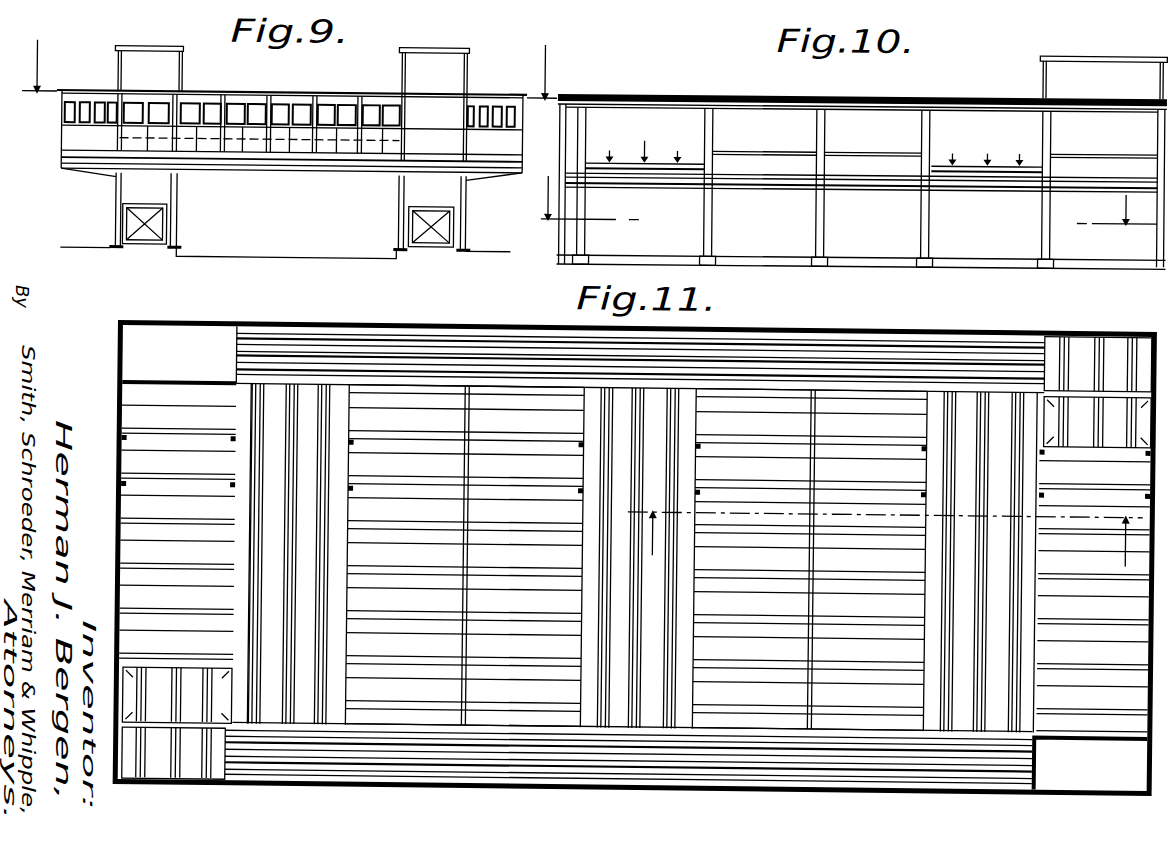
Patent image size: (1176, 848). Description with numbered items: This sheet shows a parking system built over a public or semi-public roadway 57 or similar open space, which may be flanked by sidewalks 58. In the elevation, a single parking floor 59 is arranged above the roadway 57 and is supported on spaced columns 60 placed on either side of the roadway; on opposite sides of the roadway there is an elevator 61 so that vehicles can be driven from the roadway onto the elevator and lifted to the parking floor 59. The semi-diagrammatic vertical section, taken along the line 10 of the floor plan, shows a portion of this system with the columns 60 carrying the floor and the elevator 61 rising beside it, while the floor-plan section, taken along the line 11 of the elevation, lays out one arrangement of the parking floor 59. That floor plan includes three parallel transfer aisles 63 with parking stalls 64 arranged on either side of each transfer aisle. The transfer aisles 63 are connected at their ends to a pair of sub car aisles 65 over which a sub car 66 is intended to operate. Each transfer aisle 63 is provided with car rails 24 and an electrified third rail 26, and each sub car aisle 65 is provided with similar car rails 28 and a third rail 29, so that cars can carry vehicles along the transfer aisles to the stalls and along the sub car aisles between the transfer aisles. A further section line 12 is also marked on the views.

In FIG. 11, the section line 10— 10 is at (885, 538).
In FIG. 9, the section line 11— 11 is at (290, 71).
In FIG. 10, the section line 12- 12 is at (842, 201).
In FIG. 10, the car rails 24 is at (677, 150).
In FIG. 11, the car rails 24 is at (320, 630).
In FIG. 10, the electrified third rail 26 is at (814, 150).
In FIG. 11, the electrified third rail 26 is at (285, 538).
In FIG. 11, the car rails 28 is at (751, 368).
In FIG. 11, the third rail 29 is at (950, 350).
In FIG. 9, the roadway 57 is at (256, 254).
In FIG. 9, the sidewalks 58 is at (492, 228).
In FIG. 9, the parking floor 59 is at (270, 155).
In FIG. 10, the parking floor 59 is at (566, 162).
In FIG. 10, the columns 60 is at (709, 216).
In FIG. 9, the elevator 61 is at (172, 74).
In FIG. 10, the elevator 61 is at (1060, 75).
In FIG. 11, the elevator 61 is at (1082, 421).
In FIG. 11, the transfer aisles 63 is at (340, 607).
In FIG. 10, the parking stalls 64 is at (764, 148).
In FIG. 11, the parking stalls 64 is at (227, 503).
In FIG. 11, the sub car aisles 65 is at (845, 322).
In FIG. 11, the sub car 66 is at (1082, 344).